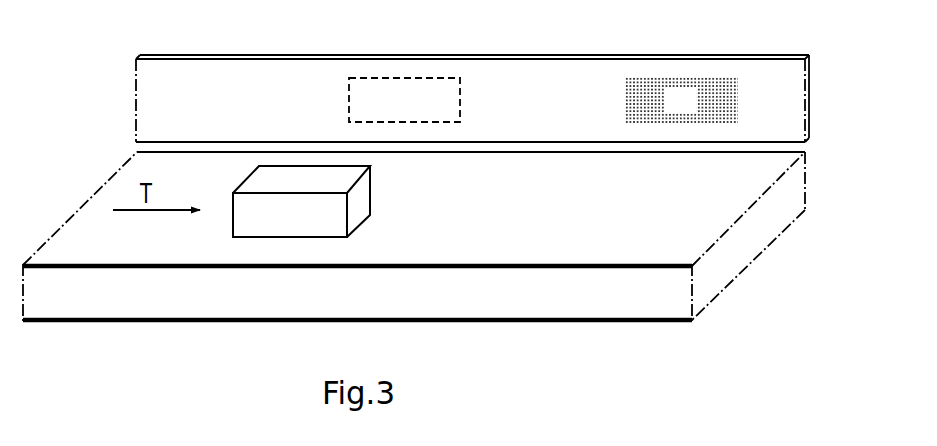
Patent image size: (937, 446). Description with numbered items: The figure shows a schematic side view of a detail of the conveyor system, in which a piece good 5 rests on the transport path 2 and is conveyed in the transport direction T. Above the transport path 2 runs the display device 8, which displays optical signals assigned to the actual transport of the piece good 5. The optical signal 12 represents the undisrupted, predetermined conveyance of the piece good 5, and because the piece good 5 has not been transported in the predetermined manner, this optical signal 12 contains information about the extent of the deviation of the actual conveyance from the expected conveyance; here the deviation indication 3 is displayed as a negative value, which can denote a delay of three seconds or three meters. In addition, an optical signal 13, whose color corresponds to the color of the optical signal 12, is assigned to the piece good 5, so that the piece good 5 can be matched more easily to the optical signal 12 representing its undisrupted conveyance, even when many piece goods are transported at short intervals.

The transport path 2 is at (595, 222).
The perforated region 3 is at (668, 101).
The piece good 5 is at (363, 197).
The display device 8 is at (213, 58).
The optical signal 12 is at (619, 99).
The optical signal 13 is at (344, 99).